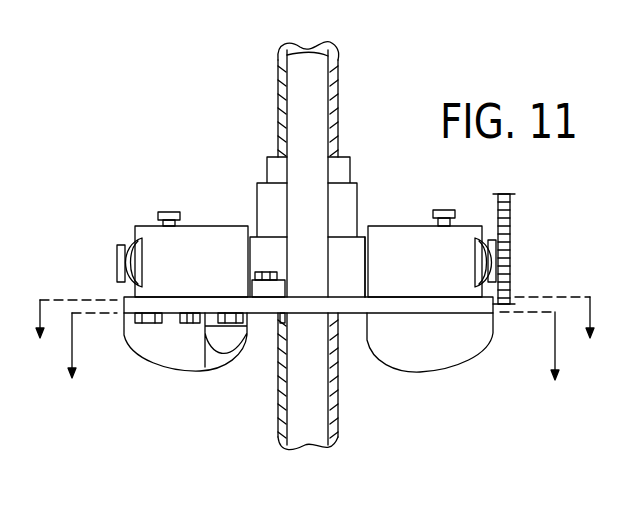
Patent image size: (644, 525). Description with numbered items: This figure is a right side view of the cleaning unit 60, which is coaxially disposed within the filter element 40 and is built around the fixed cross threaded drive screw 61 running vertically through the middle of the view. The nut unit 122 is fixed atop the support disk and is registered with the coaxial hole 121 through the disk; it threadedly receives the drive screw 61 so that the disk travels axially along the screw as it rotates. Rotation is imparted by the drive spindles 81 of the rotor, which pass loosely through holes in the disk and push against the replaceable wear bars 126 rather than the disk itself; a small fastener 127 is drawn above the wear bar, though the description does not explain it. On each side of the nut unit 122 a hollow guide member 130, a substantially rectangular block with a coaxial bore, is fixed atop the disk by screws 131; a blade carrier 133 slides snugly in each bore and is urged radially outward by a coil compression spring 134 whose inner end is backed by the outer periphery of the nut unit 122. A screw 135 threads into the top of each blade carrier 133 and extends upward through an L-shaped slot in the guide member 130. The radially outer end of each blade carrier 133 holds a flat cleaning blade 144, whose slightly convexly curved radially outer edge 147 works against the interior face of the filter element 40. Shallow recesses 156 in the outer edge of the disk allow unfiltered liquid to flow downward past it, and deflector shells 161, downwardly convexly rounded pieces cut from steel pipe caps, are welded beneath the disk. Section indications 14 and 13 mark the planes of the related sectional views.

The shallow recesses 156 is at (202, 7).
The cleaning unit 60 is at (394, 95).
The cross threaded drive screw 61 is at (347, 88).
The drive spindles 81 is at (322, 77).
The nut unit 122 is at (257, 185).
The coil compression springs 134 is at (366, 237).
The coaxial hole 121 is at (412, 305).
The blade carriers 133 is at (133, 240).
The screw 135 is at (168, 212).
The cleaning blade 144 is at (108, 250).
The radially outer edge 147 is at (117, 262).
The nut 127 is at (272, 272).
The wear bars 126 is at (252, 288).
The hollow guide members 130 is at (398, 228).
The filter element 40 is at (512, 205).
The deflector shells 161 is at (161, 358).
The screws 131 is at (188, 322).
The section line 14- 14 is at (314, 321).
The section line 13- 13 is at (315, 350).